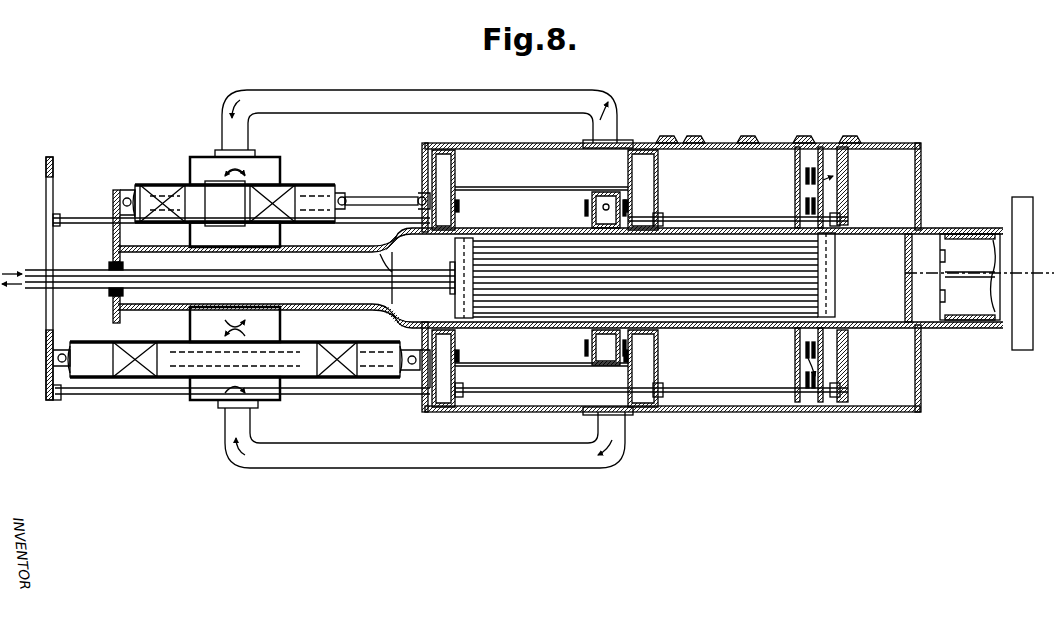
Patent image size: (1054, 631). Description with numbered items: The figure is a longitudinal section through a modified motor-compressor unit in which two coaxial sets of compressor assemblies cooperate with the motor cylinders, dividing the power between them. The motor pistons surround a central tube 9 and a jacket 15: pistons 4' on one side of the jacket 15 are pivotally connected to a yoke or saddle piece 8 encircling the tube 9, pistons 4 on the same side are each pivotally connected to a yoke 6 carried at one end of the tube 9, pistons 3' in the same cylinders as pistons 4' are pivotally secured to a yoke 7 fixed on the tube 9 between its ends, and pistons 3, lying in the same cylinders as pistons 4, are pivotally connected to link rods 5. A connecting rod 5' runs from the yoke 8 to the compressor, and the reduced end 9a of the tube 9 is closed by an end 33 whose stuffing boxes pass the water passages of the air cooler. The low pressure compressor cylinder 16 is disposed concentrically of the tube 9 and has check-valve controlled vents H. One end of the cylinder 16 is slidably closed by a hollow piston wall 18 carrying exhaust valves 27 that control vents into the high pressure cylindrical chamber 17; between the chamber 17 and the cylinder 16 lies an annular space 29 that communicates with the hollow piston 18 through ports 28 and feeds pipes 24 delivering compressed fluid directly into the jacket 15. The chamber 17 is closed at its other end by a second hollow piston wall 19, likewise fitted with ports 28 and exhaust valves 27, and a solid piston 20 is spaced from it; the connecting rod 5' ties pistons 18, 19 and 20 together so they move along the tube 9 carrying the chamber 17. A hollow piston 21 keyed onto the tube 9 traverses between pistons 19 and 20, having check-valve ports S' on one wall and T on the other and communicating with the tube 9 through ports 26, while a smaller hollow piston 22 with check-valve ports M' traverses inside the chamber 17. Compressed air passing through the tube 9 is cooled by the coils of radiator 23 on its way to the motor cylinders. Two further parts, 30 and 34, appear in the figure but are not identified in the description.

The pistons 3 is at (234, 186).
The pistons 3' is at (235, 381).
The pistons 4 is at (217, 188).
The pistons 4' is at (228, 383).
The link rods 5 is at (241, 200).
The connecting rod 5' is at (242, 406).
The yoke 6 is at (120, 200).
The yoke 7 is at (414, 364).
The yoke or saddle piece 8 is at (46, 375).
The tube 9 is at (490, 229).
The reduced end of tube 9a is at (380, 305).
The jacket 15 is at (290, 392).
The compressor cylinder 16 is at (703, 147).
The high pressure cylindrical chamber 17 is at (542, 188).
The hollow piston wall 18 is at (428, 385).
The hollow piston wall 19 is at (669, 152).
The piston 20 is at (848, 366).
The hollow piston 21 is at (795, 364).
The hollow piston 22 is at (590, 335).
The radiator 23 is at (745, 300).
The pipes 24 is at (408, 90).
The ports 26 is at (835, 246).
The exhaust valves 27 is at (459, 206).
The ports 28 is at (455, 180).
The annular cylindrical space 29 is at (560, 410).
The pipe connection 30 is at (622, 142).
The closed end of tube 33 is at (113, 304).
The piston 34 is at (969, 273).
The check-valve controlled vents H is at (733, 137).
The check valve controlled ports T is at (795, 196).
The check valve controlled ports S' is at (855, 274).
The check valve controlled ports M' is at (607, 291).